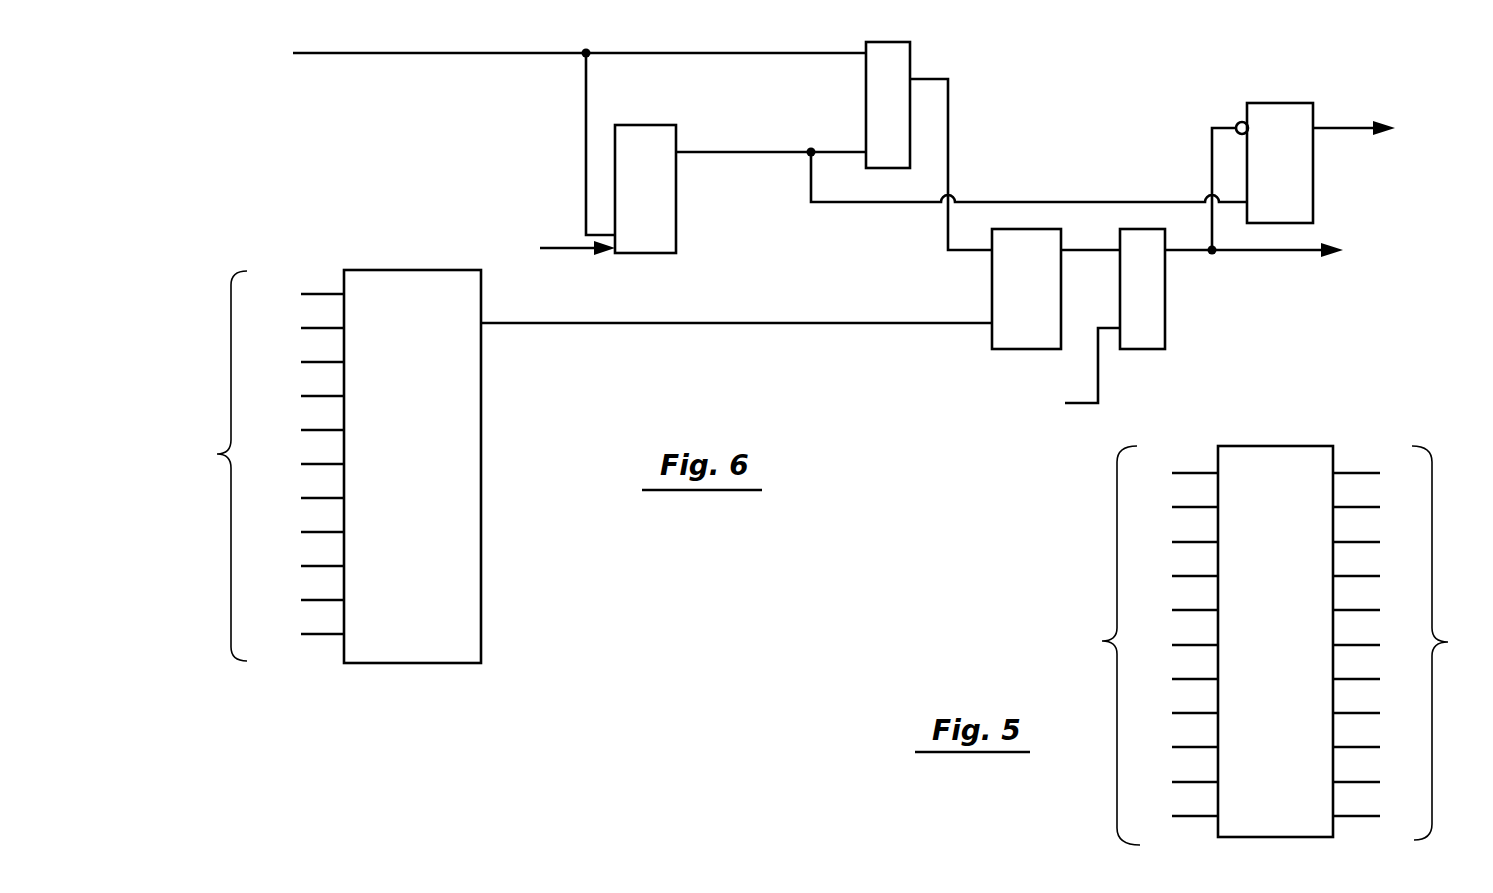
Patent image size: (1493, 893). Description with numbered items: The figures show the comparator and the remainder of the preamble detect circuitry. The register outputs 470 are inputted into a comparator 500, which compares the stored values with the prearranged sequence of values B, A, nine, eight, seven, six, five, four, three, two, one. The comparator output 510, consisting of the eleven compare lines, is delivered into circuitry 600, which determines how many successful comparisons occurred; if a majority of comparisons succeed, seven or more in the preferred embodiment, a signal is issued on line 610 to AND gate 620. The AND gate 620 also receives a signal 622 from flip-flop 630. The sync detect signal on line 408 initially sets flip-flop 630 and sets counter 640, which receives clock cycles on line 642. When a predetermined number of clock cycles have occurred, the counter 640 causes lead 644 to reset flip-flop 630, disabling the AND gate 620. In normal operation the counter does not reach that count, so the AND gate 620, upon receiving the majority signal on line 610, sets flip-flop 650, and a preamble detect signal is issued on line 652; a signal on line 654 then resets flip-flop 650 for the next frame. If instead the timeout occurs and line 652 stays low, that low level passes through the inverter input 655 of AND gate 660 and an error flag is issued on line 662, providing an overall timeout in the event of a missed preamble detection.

In FIG. 6, the sync detect signal line 408 is at (450, 52).
In FIG. 6, the flip-flop 630 is at (888, 41).
In FIG. 6, the counter 640 is at (638, 125).
In FIG. 6, the lead 644 is at (715, 153).
In FIG. 6, the clock line 642 is at (558, 250).
In FIG. 6, the signal 622 is at (950, 147).
In FIG. 6, the AND gate 620 is at (1022, 350).
In FIG. 6, the majority signal line 610 is at (770, 324).
In FIG. 6, the flip-flop 650 is at (1166, 313).
In FIG. 6, the reset line 654 is at (1077, 404).
In FIG. 6, the preamble detect line 652 is at (1256, 253).
In FIG. 6, the inverter input 655 is at (1238, 121).
In FIG. 6, the AND gate 660 is at (1280, 103).
In FIG. 6, the error flag line 662 is at (1343, 130).
In FIG. 6, the circuitry 600 is at (441, 664).
In FIG. 6, the comparator output 510 is at (251, 466).
In FIG. 5, the comparator output 510 is at (1409, 643).
In FIG. 5, the comparator 500 is at (1276, 432).
In FIG. 5, the register outputs 470 is at (1130, 645).